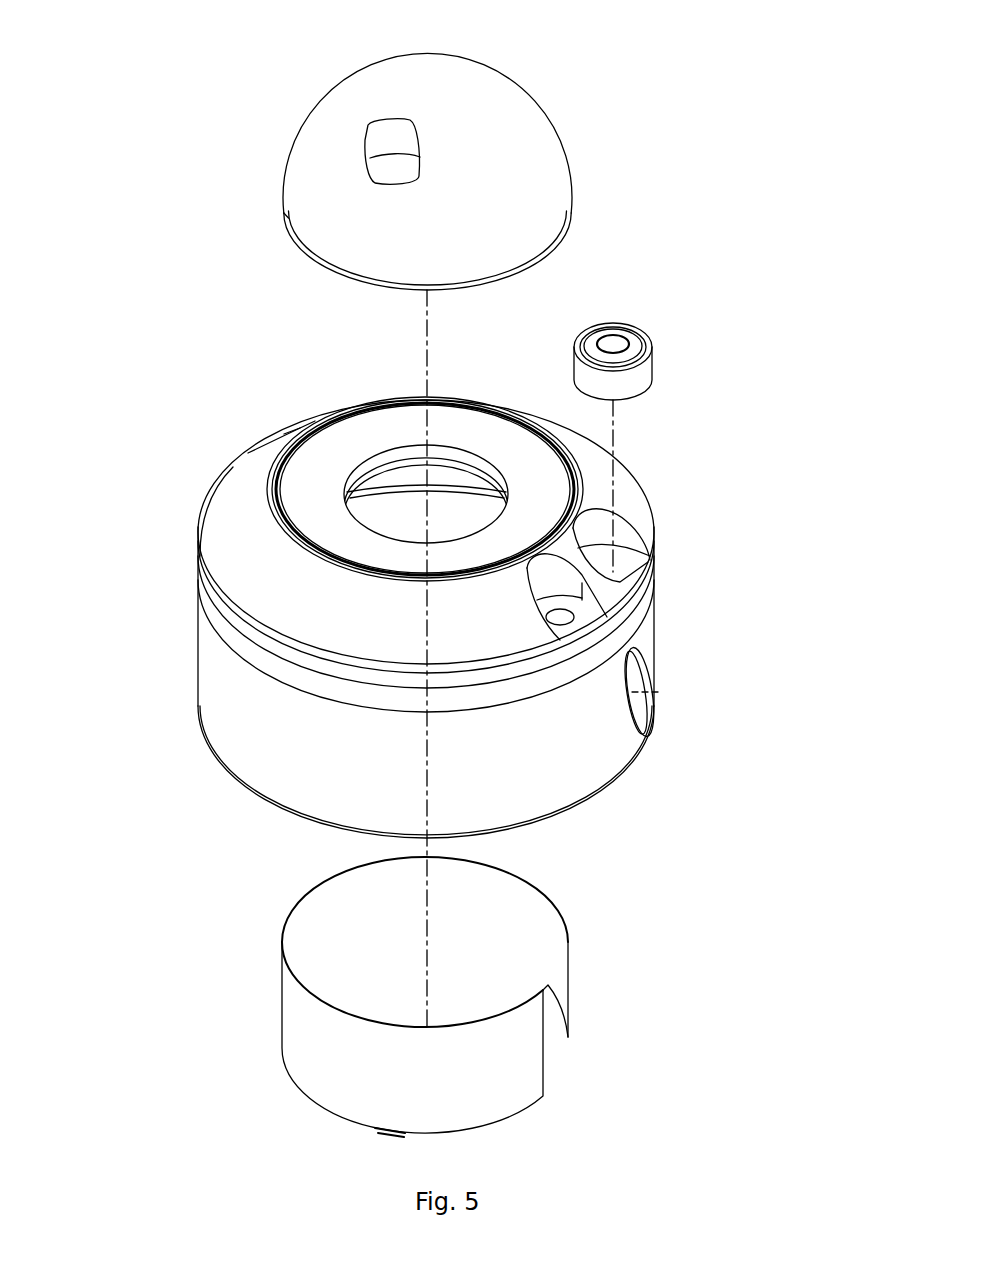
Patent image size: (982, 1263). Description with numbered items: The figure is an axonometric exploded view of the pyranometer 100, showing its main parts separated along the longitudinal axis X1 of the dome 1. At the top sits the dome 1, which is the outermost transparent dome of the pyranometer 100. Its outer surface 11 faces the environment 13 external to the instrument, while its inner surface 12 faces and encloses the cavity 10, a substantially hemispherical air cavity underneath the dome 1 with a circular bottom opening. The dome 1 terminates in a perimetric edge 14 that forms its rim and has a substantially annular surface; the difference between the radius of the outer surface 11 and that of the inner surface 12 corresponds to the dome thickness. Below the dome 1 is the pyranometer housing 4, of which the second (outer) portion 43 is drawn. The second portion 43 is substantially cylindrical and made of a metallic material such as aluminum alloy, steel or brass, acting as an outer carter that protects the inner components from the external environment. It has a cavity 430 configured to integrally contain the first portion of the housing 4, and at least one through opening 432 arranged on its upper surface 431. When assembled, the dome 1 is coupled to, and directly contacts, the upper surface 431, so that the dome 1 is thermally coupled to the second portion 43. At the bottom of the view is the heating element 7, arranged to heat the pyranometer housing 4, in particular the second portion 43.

The dome 1 is at (589, 125).
The pyranometer 100 is at (706, 140).
The cavity 10 is at (335, 286).
The outer surface 11 is at (322, 177).
The inner surface 12 is at (390, 143).
The environment 13 is at (306, 30).
The edge 14 is at (587, 228).
The pyranometer housing 4 is at (148, 438).
The second portion 43 is at (233, 730).
The cavity 430 is at (571, 839).
The upper surface 431 is at (540, 480).
The through opening 432 is at (456, 456).
The heating element 7 is at (320, 1037).
The longitudinal axis X1 is at (411, 311).